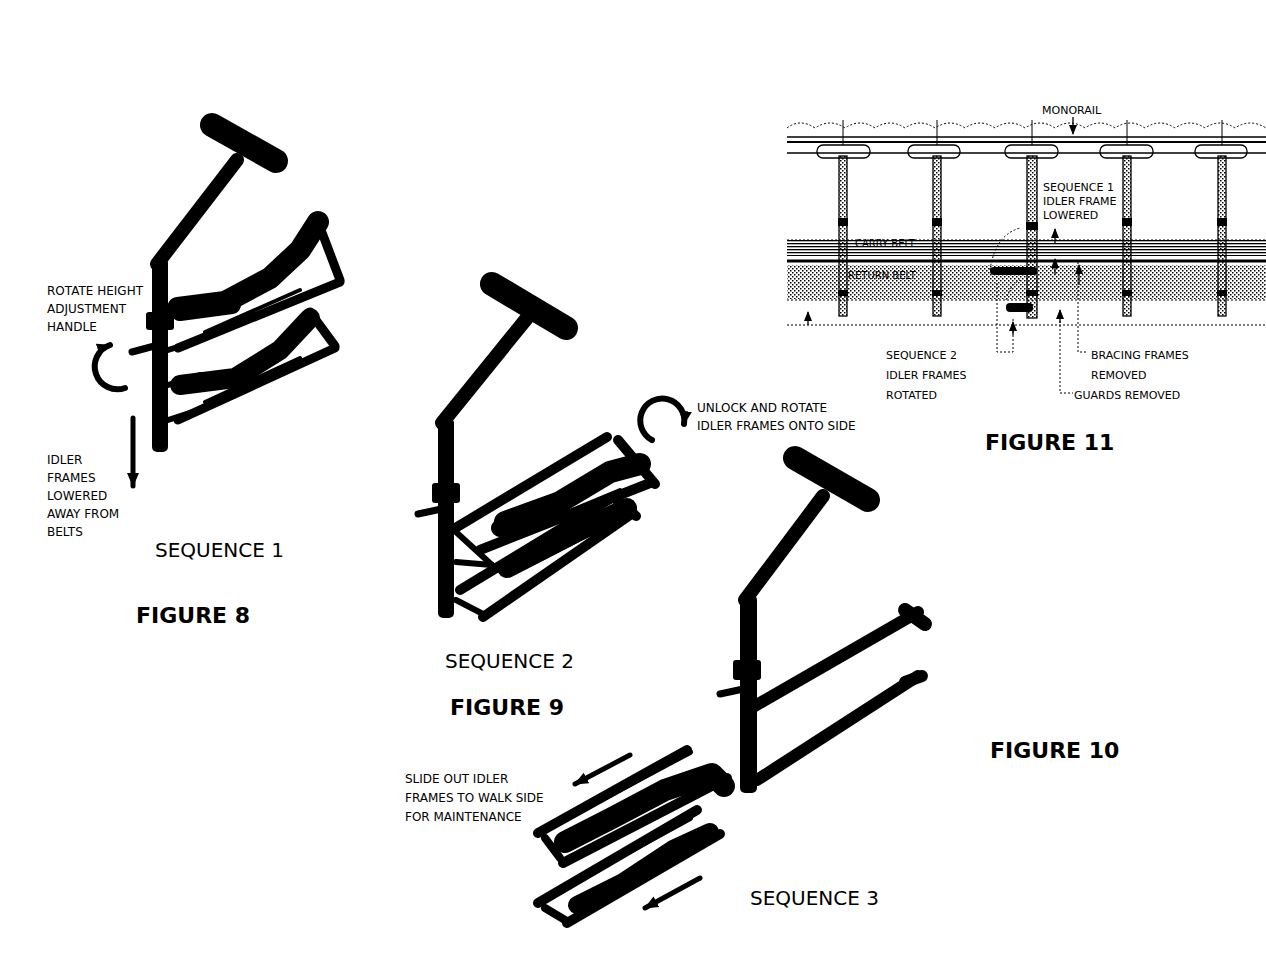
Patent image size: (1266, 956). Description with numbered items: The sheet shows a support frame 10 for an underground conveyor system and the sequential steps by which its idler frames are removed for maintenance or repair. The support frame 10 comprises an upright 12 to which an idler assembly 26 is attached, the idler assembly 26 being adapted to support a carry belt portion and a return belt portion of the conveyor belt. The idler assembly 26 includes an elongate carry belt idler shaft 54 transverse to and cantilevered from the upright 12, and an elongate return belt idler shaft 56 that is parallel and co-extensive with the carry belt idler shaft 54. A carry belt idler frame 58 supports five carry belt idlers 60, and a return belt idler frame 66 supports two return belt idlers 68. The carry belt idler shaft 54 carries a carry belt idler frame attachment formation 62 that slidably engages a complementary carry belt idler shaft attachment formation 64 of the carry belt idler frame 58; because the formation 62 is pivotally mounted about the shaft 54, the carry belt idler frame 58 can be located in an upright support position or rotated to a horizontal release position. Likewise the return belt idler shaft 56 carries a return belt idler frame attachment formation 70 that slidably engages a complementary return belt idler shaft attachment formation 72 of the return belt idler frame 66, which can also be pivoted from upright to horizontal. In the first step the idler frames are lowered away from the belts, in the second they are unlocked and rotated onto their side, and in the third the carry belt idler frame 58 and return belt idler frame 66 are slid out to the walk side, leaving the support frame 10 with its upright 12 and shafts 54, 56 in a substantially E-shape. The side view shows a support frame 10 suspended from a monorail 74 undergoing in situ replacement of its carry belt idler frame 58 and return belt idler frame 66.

In FIG. 8, the support frame 10 is at (187, 208).
In FIG. 9, the support frame 10 is at (478, 373).
In FIG. 10, the support frame 10 is at (807, 543).
In FIG. 11, the support frame 10 is at (1024, 214).
In FIG. 10, the upright 12 is at (738, 628).
In FIG. 9, the idler assembly 26 is at (566, 440).
In FIG. 10, the carry belt idler shaft 54 is at (928, 606).
In FIG. 10, the return belt idler shaft 56 is at (932, 677).
In FIG. 8, the carry belt idler frame 58 is at (323, 223).
In FIG. 9, the carry belt idler frame 58 is at (657, 480).
In FIG. 10, the carry belt idler frame 58 is at (538, 850).
In FIG. 11, the carry belt idler frame 58 is at (985, 279).
In FIG. 8, the carry belt idlers 60 is at (265, 272).
In FIG. 9, the carry belt idlers 60 is at (568, 460).
In FIG. 10, the carry belt idler frame attachment formation 62 is at (916, 644).
In FIG. 10, the carry belt idler shaft attachment formation 64 is at (665, 757).
In FIG. 8, the return belt idler frame 66 is at (325, 307).
In FIG. 9, the return belt idler frame 66 is at (597, 560).
In FIG. 10, the return belt idler frame 66 is at (538, 913).
In FIG. 11, the return belt idler frame 66 is at (1028, 325).
In FIG. 9, the return belt idlers 68 is at (567, 570).
In FIG. 10, the return belt idler frame attachment formation 70 is at (838, 750).
In FIG. 10, the return belt idler shaft attachment formation 72 is at (553, 882).
In FIG. 11, the monorail 74 is at (887, 138).